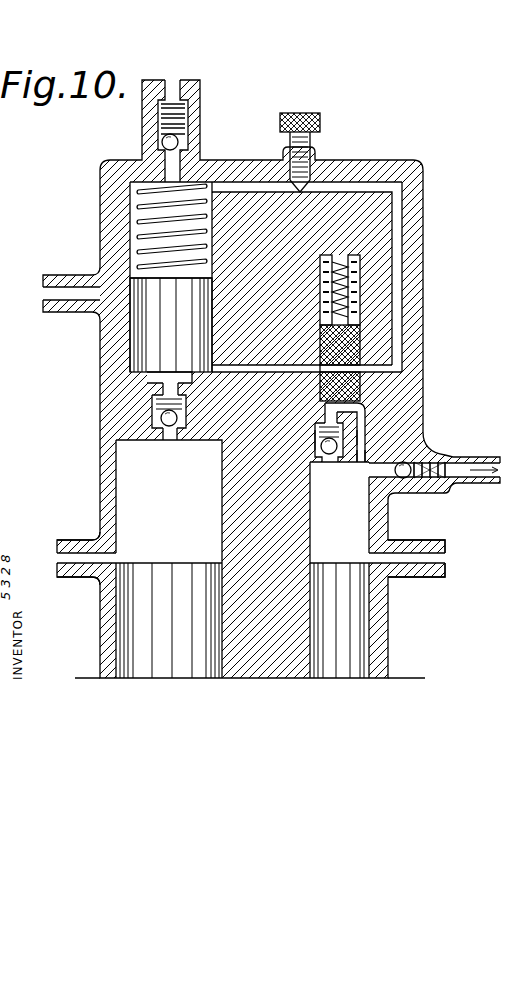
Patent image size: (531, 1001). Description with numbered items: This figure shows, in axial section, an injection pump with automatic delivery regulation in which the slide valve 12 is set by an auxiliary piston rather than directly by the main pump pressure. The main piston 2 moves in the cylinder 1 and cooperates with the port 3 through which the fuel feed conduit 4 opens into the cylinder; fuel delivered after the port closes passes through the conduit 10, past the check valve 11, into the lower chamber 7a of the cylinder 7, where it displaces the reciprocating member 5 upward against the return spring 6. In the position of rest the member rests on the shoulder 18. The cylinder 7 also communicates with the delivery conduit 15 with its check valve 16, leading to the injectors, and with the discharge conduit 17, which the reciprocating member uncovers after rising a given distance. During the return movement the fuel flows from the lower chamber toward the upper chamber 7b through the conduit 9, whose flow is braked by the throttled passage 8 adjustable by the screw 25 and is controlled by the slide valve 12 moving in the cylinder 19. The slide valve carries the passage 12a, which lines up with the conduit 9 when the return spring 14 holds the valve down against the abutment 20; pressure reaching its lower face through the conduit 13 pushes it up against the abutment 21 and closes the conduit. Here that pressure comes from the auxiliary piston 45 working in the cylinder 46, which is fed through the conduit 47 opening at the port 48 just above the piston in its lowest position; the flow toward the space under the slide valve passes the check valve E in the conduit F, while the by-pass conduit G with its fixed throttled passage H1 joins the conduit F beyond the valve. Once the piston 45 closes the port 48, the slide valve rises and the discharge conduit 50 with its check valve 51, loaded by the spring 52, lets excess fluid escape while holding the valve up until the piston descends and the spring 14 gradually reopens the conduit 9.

The cylinder 1 is at (116, 492).
The main piston 2 is at (146, 618).
The port 3 is at (118, 558).
The fuel feed conduit 4 is at (70, 556).
The reciprocating member 5 is at (146, 322).
The return spring 6 is at (140, 223).
The cylinder 7 is at (136, 348).
The lower chamber 7a is at (150, 378).
The chamber 7b is at (136, 191).
The throttled passage 8 is at (302, 188).
The conduit 9 is at (398, 232).
The conduit 10 is at (112, 446).
The check valve 11 is at (158, 418).
The slide valve 12 is at (350, 350).
The passage 12a is at (350, 368).
The conduit 13 is at (342, 410).
The return spring 14 is at (350, 327).
The delivery conduit 15 is at (168, 164).
The check valve 16 is at (178, 141).
The discharge conduit 17 is at (76, 292).
The shoulder 18 is at (203, 380).
The cylinder 19 is at (350, 305).
The abutment 20 is at (364, 404).
The abutment 21 is at (340, 278).
The screw 25 is at (290, 135).
The auxiliary piston 45 is at (340, 618).
The cylinder 46 is at (369, 513).
The conduit 47 is at (418, 561).
The port 48 is at (369, 558).
The discharge conduit 50 is at (396, 478).
The check valve 51 is at (418, 480).
The spring 52 is at (434, 489).
The check valve E is at (330, 460).
The conduit F is at (300, 432).
The by-pass conduit G is at (361, 462).
The throttled passage H1 is at (366, 436).